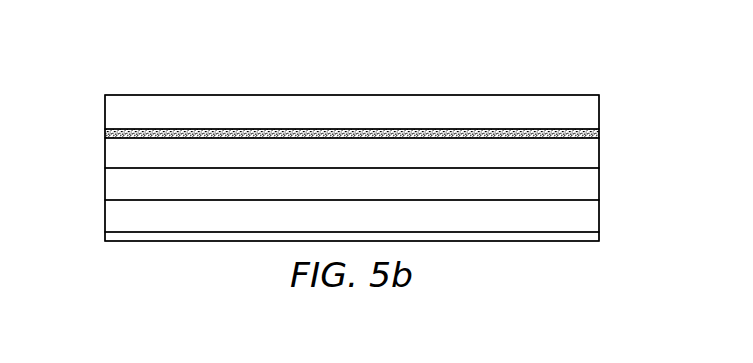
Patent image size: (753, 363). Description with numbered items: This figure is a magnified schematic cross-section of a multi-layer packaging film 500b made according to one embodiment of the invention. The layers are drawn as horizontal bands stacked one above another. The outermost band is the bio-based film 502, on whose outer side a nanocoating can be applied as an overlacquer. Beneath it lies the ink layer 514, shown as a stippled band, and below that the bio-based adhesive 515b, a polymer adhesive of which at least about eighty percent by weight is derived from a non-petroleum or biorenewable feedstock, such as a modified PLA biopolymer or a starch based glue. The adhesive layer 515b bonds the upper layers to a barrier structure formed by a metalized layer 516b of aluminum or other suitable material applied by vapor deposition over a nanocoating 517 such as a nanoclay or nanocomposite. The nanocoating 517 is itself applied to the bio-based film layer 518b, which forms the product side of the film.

The optical film stack 500b is at (485, 65).
The bio-based film 502 is at (105, 105).
The ink layer 514 is at (105, 130).
The bio-based adhesive 515b is at (105, 160).
The metalized layer 516b is at (105, 185).
The nanocoating 517 is at (105, 213).
The film layer 518b is at (105, 237).